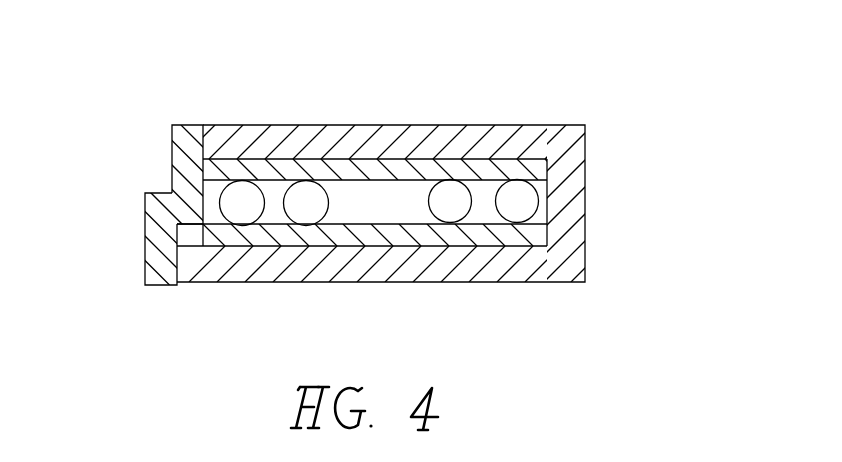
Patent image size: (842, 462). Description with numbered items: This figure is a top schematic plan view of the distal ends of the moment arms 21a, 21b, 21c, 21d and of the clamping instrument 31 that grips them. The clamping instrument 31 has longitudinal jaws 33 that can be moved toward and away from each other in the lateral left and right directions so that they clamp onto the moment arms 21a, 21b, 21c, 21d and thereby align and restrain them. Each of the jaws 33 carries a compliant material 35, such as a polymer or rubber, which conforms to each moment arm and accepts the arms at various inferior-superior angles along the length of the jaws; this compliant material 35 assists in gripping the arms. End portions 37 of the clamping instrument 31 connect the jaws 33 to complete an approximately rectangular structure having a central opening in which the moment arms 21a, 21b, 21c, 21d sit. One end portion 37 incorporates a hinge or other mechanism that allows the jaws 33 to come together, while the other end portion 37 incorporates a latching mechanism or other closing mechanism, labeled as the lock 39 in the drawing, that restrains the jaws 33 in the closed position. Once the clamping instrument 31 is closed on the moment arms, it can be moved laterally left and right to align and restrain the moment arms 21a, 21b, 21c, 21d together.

The clamping instrument 31 is at (598, 98).
The longitudinal jaws 33 is at (425, 125).
The compliant material 35 is at (368, 223).
The end portions 37 is at (146, 220).
The lock 39 is at (157, 178).
The moment arm 21a is at (222, 220).
The moment arm 21b is at (282, 222).
The moment arm 21c is at (472, 218).
The moment arm 21d is at (540, 205).